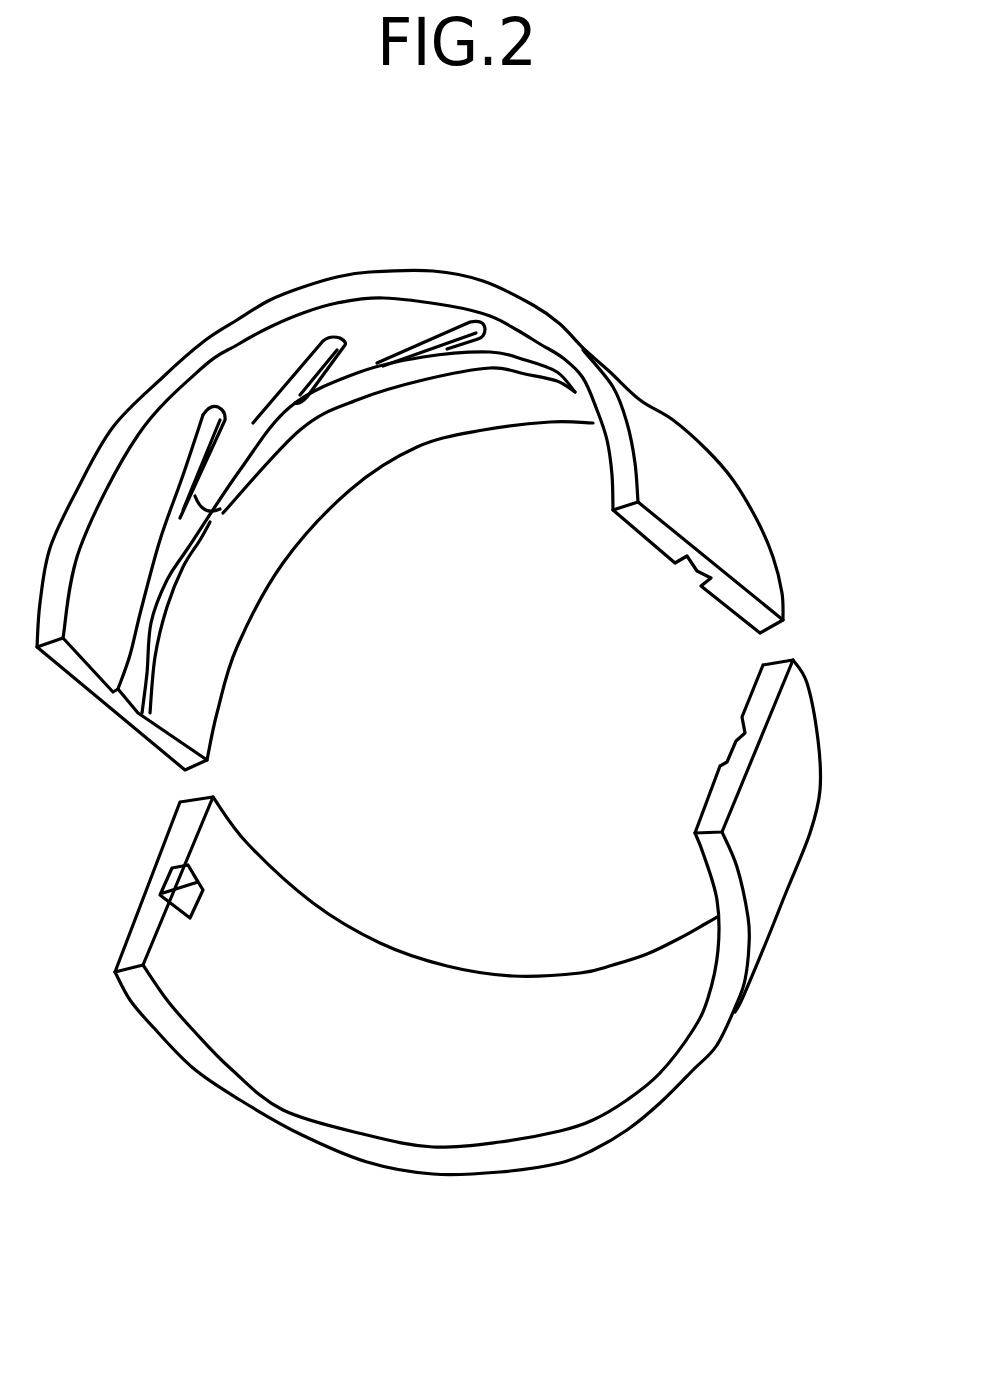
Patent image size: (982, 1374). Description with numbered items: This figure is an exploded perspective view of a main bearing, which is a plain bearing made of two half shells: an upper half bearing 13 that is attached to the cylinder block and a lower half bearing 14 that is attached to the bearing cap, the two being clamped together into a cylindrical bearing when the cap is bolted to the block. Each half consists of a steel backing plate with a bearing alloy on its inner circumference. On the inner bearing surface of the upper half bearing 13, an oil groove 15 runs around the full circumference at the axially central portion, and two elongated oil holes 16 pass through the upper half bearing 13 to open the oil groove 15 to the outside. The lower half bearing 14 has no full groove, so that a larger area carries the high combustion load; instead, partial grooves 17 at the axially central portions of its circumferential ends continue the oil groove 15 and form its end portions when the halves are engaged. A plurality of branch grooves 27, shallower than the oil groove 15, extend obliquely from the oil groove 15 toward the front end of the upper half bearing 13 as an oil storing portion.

The upper half bearing 13 is at (662, 410).
The lower half bearing 14 is at (812, 834).
The oil groove 15 is at (143, 618).
The elongated oil hole 16 is at (462, 355).
The partial groove 17 is at (177, 887).
The branch groove 27 is at (327, 343).